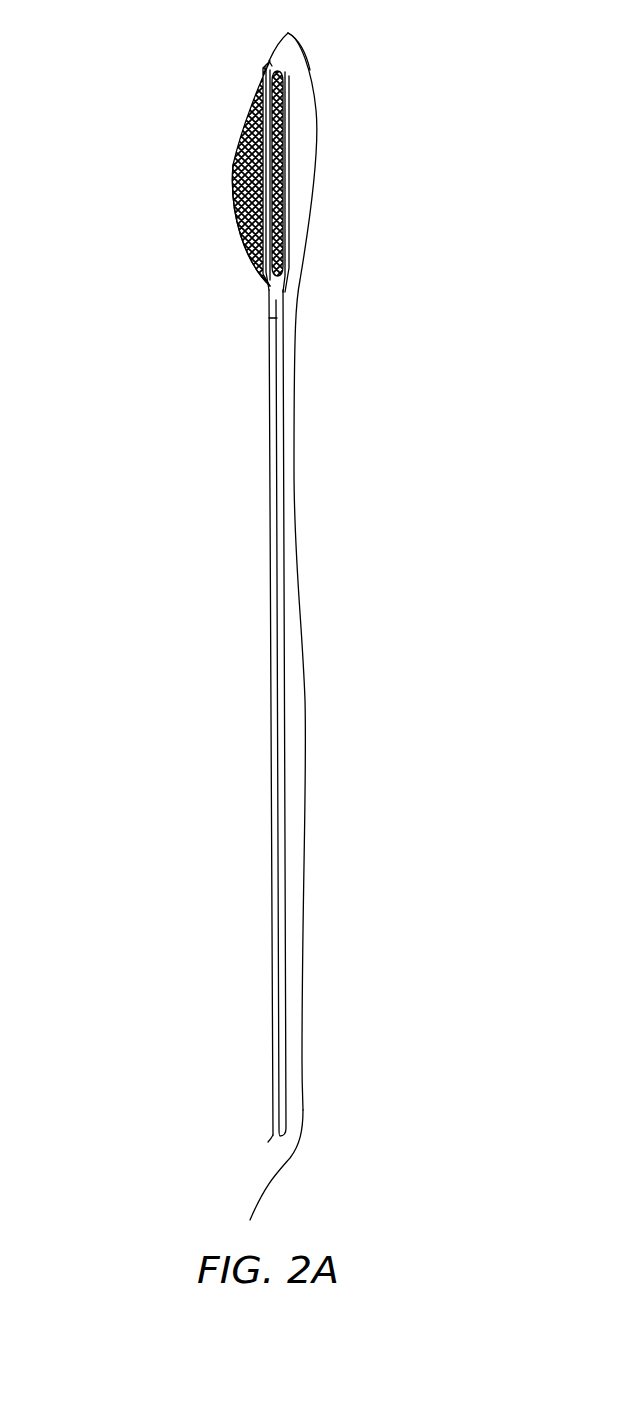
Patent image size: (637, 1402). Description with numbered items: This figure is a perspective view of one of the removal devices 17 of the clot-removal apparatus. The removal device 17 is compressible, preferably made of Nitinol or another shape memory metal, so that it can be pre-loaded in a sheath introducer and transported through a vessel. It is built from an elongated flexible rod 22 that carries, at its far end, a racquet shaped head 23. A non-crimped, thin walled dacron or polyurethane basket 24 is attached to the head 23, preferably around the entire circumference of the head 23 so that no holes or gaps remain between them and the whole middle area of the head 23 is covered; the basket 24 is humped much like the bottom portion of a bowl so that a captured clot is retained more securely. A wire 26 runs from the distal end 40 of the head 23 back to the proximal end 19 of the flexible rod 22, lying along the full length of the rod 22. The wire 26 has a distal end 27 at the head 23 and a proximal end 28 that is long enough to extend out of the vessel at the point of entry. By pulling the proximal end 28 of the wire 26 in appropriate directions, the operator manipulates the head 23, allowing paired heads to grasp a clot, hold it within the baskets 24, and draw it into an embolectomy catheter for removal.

The removal device 17 is at (345, 338).
The proximal end of flexible rod 19 is at (277, 1133).
The elongated flexible rod 22 is at (270, 537).
The racquet shaped head 23 is at (257, 215).
The basket 24 is at (232, 188).
The wire 26 is at (303, 630).
The distal end of wire 27 is at (306, 57).
The proximal end of wire 28 is at (262, 1197).
The distal end of head 40 is at (268, 62).